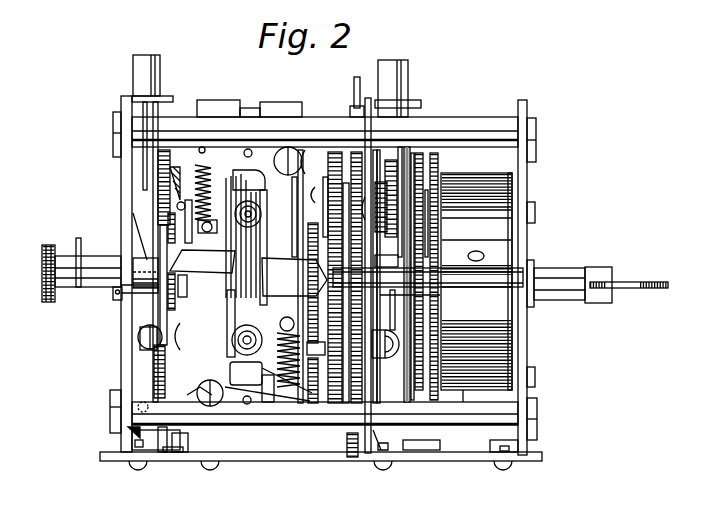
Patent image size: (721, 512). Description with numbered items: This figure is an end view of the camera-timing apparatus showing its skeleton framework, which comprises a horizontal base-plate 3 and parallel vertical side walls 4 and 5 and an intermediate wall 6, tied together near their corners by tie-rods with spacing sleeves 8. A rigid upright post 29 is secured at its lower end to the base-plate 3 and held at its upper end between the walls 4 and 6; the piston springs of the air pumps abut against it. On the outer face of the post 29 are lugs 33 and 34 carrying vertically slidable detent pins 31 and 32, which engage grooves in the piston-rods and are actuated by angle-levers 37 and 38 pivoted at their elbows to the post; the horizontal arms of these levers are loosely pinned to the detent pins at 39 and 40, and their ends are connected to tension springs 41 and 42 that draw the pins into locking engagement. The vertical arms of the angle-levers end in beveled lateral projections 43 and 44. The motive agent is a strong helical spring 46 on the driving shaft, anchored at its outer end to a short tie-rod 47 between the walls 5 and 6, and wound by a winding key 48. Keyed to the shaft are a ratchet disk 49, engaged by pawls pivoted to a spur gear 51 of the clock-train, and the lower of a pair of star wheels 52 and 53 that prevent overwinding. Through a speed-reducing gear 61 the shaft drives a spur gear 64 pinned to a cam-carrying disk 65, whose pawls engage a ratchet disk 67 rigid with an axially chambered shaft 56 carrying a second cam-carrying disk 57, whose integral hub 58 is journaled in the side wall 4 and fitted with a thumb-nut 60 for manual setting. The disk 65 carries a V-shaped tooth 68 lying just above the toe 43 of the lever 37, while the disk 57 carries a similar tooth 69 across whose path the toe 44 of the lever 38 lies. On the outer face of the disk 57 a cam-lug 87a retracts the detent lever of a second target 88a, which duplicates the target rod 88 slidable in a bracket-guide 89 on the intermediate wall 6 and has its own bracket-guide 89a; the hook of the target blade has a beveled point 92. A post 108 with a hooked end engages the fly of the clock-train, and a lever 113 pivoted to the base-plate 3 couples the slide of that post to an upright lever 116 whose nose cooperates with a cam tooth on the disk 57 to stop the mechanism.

The base-plate 3 is at (338, 463).
The side wall 4 is at (120, 168).
The side wall 5 is at (532, 186).
The intermediate wall 6 is at (368, 99).
The spacing sleeves 8 is at (316, 128).
The upright post 29 is at (270, 104).
The detent pin 31 is at (260, 234).
The detent pin 32 is at (254, 361).
The lug 33 is at (236, 168).
The lug 34 is at (237, 375).
The angle-lever 37 is at (263, 214).
The angle-lever 38 is at (232, 323).
The pin connection 39 is at (262, 147).
The pin connection 40 is at (247, 402).
The tension spring 41 is at (185, 168).
The tension spring 42 is at (273, 373).
The lateral projection 43 is at (294, 277).
The lateral projection 44 is at (202, 237).
The helical spring 46 is at (467, 178).
The tie-rod 47 is at (418, 278).
The winding key 48 is at (633, 282).
The ratchet disk 49 is at (424, 243).
The spur gear 51 is at (448, 152).
The star wheel 52 is at (463, 255).
The star wheel 53 is at (394, 162).
The axially chambered shaft 56 is at (166, 367).
The cam-carrying disk 57 is at (146, 211).
The hub 58 is at (140, 262).
The thumb-nut 60 is at (45, 293).
The speed-reducing gear 61 is at (356, 92).
The spur gear 64 is at (341, 148).
The cam-carrying disk 65 is at (330, 150).
The ratchet disk 67 is at (312, 181).
The V-shaped tooth 68 is at (307, 257).
The cam-shaped tooth 69 is at (180, 169).
The cam-lug 87a is at (150, 317).
The upright rod 88 is at (400, 65).
The target 88a is at (146, 62).
The bracket-guide 89 is at (422, 100).
The bracket-guide 89a is at (166, 96).
The beveled point 92 is at (385, 443).
The post 108 is at (313, 393).
The lever 113 is at (172, 451).
The upright lever 116 is at (130, 437).